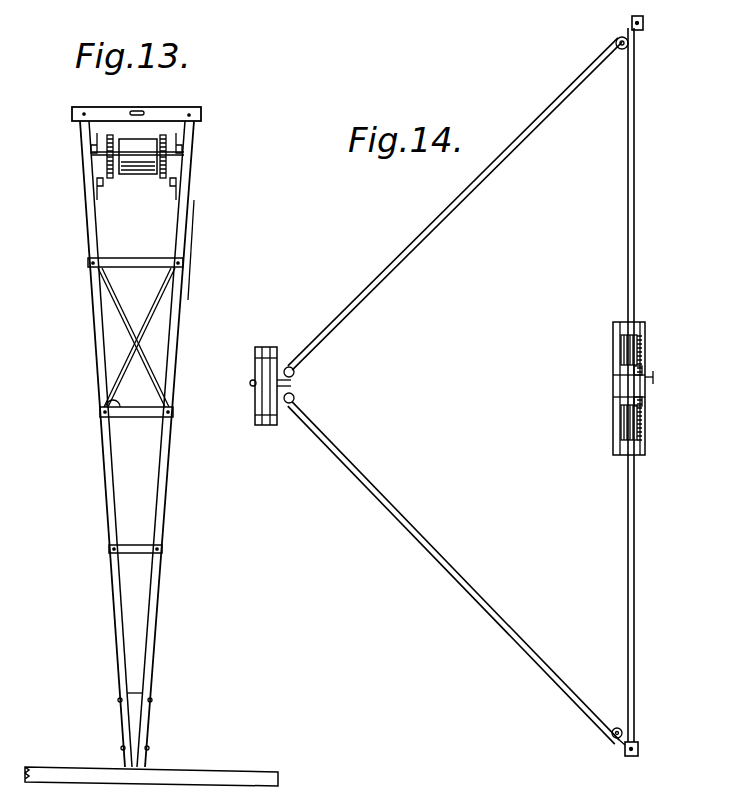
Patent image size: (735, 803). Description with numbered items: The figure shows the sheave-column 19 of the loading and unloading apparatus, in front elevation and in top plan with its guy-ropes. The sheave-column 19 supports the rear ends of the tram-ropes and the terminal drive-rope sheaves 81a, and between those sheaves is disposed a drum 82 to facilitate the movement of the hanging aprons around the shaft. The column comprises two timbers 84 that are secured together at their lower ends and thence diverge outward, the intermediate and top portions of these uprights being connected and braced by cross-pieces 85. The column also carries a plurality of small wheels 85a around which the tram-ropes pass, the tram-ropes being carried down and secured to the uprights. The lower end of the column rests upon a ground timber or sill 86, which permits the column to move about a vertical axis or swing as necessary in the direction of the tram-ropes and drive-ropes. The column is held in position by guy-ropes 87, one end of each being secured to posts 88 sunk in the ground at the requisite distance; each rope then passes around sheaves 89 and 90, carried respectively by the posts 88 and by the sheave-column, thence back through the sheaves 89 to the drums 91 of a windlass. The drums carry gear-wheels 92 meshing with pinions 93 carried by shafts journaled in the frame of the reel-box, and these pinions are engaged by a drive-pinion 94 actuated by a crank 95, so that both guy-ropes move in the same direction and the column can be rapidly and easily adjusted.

In FIG. 13, the sheave-column 19 is at (177, 313).
In FIG. 14, the sheave-column 19 is at (268, 356).
In FIG. 13, the terminal drive-rope sheaves 81a is at (118, 143).
In FIG. 13, the drum 82 is at (134, 166).
In FIG. 13, the timbers 84 is at (105, 465).
In FIG. 13, the cross-pieces 85 is at (105, 406).
In FIG. 13, the small wheels 85a is at (202, 178).
In FIG. 13, the ground timber or sill 86 is at (151, 766).
In FIG. 14, the guy-ropes 87 is at (628, 262).
In FIG. 14, the posts 88 is at (643, 24).
In FIG. 14, the sheaves 89 is at (621, 43).
In FIG. 14, the sheaves 90 is at (304, 386).
In FIG. 14, the drums 91 is at (621, 352).
In FIG. 14, the gear-wheels 92 is at (641, 346).
In FIG. 14, the pinions 93 is at (645, 371).
In FIG. 14, the drive-pinion 94 is at (650, 395).
In FIG. 14, the crank 95 is at (613, 396).